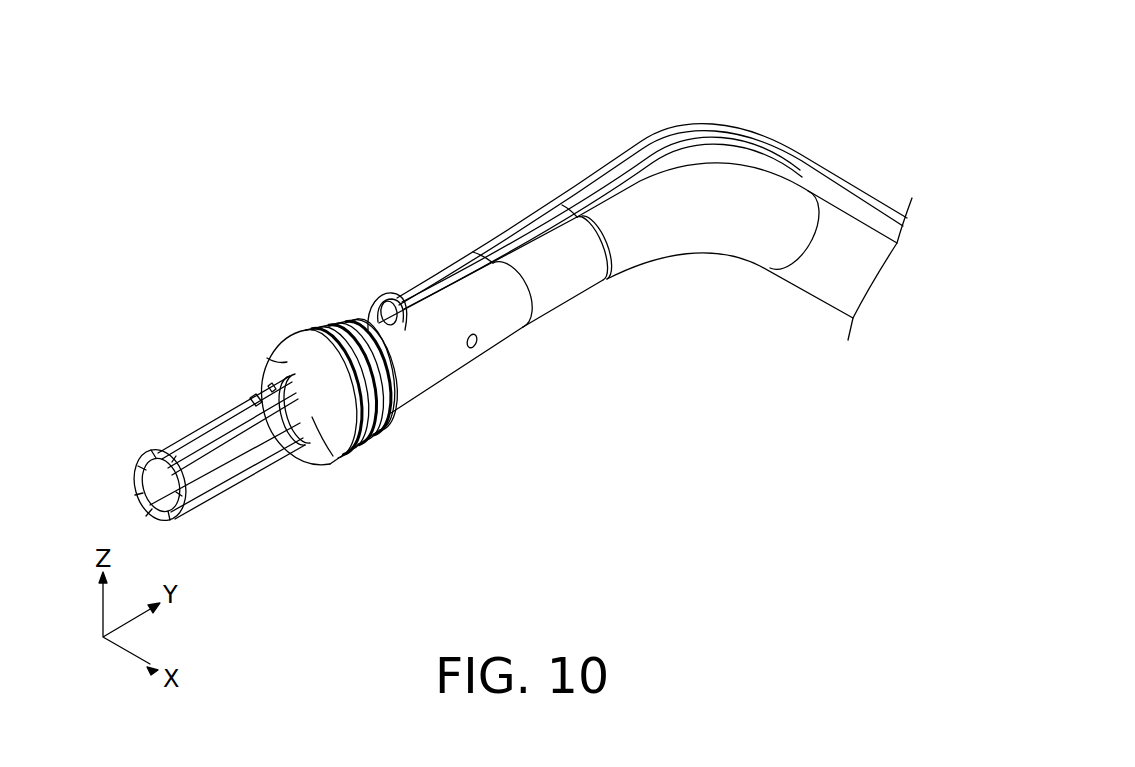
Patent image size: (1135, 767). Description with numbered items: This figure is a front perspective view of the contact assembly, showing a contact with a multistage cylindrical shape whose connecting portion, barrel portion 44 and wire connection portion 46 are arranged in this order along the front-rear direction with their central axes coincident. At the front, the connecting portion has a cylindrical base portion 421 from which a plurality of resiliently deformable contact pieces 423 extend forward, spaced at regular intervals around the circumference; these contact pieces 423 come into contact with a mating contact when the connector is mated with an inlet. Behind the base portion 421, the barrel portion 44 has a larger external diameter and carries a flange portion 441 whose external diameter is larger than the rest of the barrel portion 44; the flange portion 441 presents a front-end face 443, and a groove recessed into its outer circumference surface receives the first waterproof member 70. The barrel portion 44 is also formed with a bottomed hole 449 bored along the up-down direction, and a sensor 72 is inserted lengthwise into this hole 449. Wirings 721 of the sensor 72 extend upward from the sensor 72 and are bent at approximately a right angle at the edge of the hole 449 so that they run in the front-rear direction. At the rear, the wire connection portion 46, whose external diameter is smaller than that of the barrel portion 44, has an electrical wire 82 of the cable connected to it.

The contact pieces 423 is at (230, 473).
The base portion 421 is at (332, 458).
The front-end face 443 is at (268, 360).
The first waterproof member 70 is at (304, 330).
The flange portion 441 is at (386, 385).
The barrel portion 44 is at (427, 357).
The sensor 72 is at (374, 320).
The hole 449 is at (396, 300).
The wirings 721 is at (685, 151).
The wire connection portion 46 is at (497, 307).
The electrical wire 82 is at (740, 228).